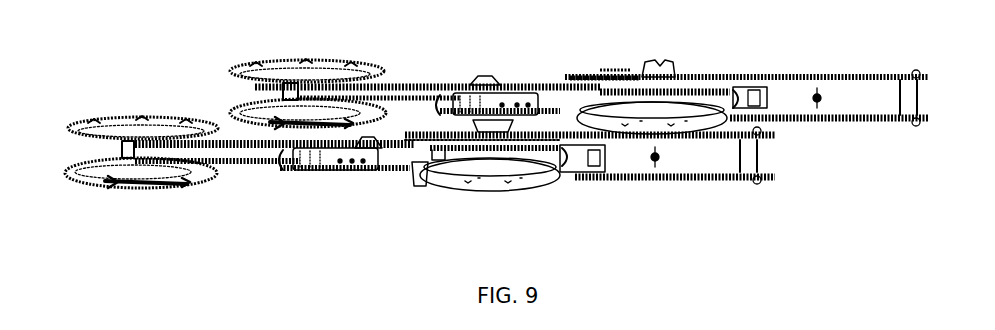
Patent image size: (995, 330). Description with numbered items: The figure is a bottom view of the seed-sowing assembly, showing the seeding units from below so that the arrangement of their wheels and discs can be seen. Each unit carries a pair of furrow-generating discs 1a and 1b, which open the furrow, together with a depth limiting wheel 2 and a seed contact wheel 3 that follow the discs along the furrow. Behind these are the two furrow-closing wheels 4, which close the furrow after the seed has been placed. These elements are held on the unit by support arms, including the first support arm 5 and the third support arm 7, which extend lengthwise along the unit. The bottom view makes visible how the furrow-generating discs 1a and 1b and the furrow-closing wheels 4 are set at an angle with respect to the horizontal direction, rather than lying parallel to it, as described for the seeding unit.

The furrow-generating disc 1a is at (417, 177).
The furrow-generating disc 1b is at (690, 75).
The depth limiting wheel 2 is at (533, 185).
The seed contact wheel 3 is at (458, 80).
The furrow-closing wheels 4 is at (258, 67).
The first support arm 5 is at (845, 72).
The third support arm 7 is at (390, 97).